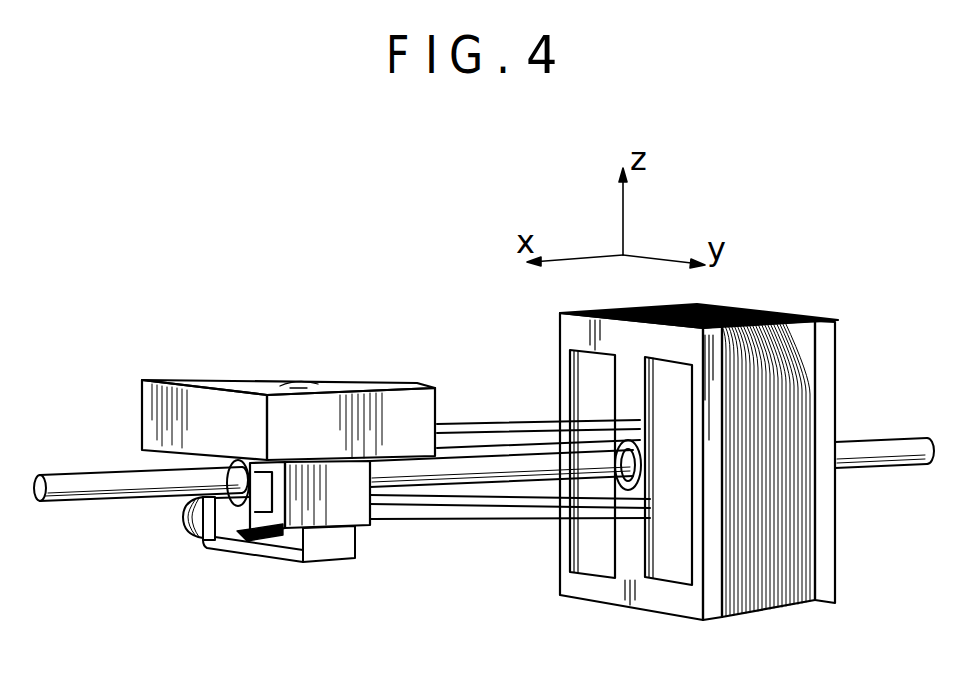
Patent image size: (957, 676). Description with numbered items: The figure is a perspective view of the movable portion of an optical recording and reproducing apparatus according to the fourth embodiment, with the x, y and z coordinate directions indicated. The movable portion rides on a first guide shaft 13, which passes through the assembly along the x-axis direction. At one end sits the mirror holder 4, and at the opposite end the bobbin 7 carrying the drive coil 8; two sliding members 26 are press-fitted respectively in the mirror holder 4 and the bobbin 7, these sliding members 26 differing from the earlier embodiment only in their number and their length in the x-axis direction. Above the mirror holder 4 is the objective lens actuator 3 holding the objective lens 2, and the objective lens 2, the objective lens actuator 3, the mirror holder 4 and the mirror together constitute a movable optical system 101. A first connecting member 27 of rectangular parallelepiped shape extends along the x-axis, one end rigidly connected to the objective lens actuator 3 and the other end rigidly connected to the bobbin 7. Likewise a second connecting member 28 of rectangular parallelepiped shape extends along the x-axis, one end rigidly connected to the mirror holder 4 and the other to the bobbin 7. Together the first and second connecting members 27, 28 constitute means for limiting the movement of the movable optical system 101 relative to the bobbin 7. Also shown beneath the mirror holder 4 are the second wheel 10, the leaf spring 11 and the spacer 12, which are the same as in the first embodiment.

The movable optical system 101 is at (140, 422).
The objective lens 2 is at (297, 383).
The objective lens actuator 3 is at (381, 384).
The mirror holder 4 is at (360, 520).
The bobbin 7 is at (830, 381).
The drive coil 8 is at (780, 327).
The second wheel 10 is at (182, 522).
The leaf spring 11 is at (267, 554).
The spacer 12 is at (332, 553).
The first guide shaft 13 is at (76, 476).
The sliding members 26 is at (235, 505).
The first connecting member 27 is at (482, 423).
The second connecting member 28 is at (482, 512).